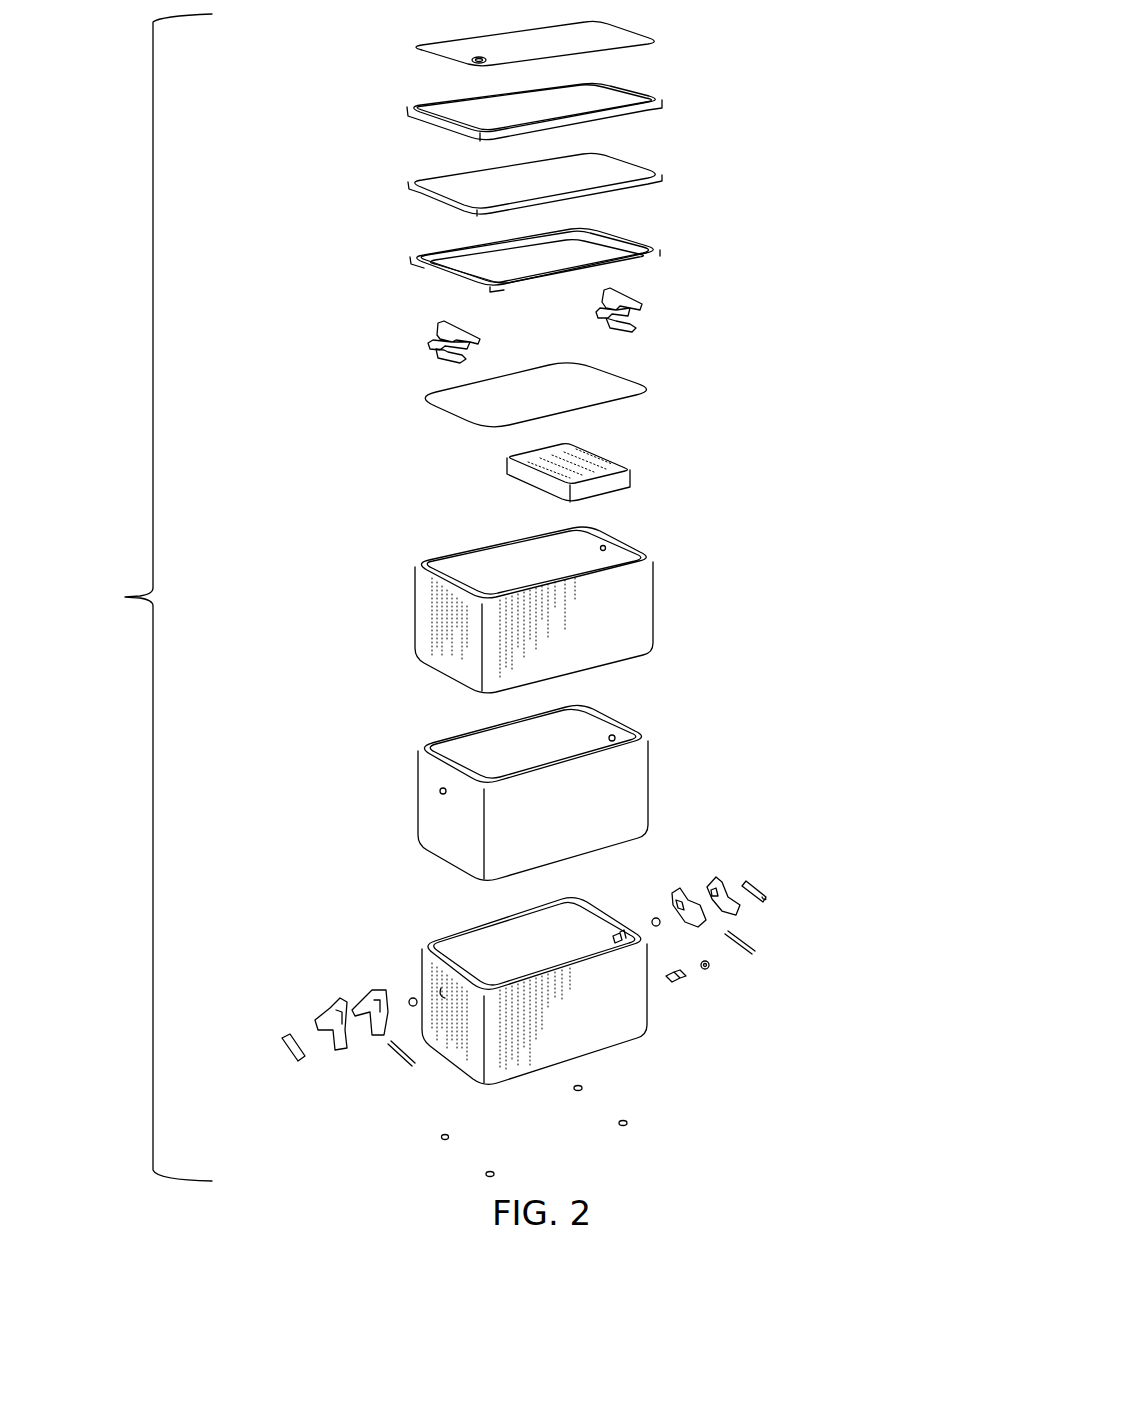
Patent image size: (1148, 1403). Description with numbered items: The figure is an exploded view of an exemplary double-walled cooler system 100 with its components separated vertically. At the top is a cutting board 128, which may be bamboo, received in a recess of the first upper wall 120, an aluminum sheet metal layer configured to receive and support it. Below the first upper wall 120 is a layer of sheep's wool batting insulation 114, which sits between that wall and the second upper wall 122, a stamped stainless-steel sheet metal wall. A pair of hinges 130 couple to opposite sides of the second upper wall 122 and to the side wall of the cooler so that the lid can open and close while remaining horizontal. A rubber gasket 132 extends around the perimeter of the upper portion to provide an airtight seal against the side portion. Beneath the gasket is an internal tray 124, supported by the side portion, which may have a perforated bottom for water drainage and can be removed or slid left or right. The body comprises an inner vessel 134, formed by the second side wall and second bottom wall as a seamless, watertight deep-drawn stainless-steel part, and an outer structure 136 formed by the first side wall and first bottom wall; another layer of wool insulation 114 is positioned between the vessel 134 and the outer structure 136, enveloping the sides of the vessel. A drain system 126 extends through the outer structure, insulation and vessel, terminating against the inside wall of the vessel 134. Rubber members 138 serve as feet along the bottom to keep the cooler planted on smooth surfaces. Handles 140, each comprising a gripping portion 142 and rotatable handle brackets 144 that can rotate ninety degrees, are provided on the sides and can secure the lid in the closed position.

The cooler system 100 is at (125, 597).
The insulation 114 is at (406, 190).
The first upper wall 120 is at (664, 103).
The second upper wall 122 is at (662, 250).
The internal tray 124 is at (506, 480).
The drain system 126 is at (682, 976).
The cutting board 128 is at (408, 47).
The hinges 130 is at (641, 307).
The rubber gasket 132 is at (656, 390).
The inner vessel 134 is at (648, 585).
The outer structure 136 is at (612, 1046).
The rubber members 138 is at (440, 1137).
The handles 140 is at (757, 874).
The gripping portion 142 is at (766, 898).
The rotatable handle brackets 144 is at (657, 883).